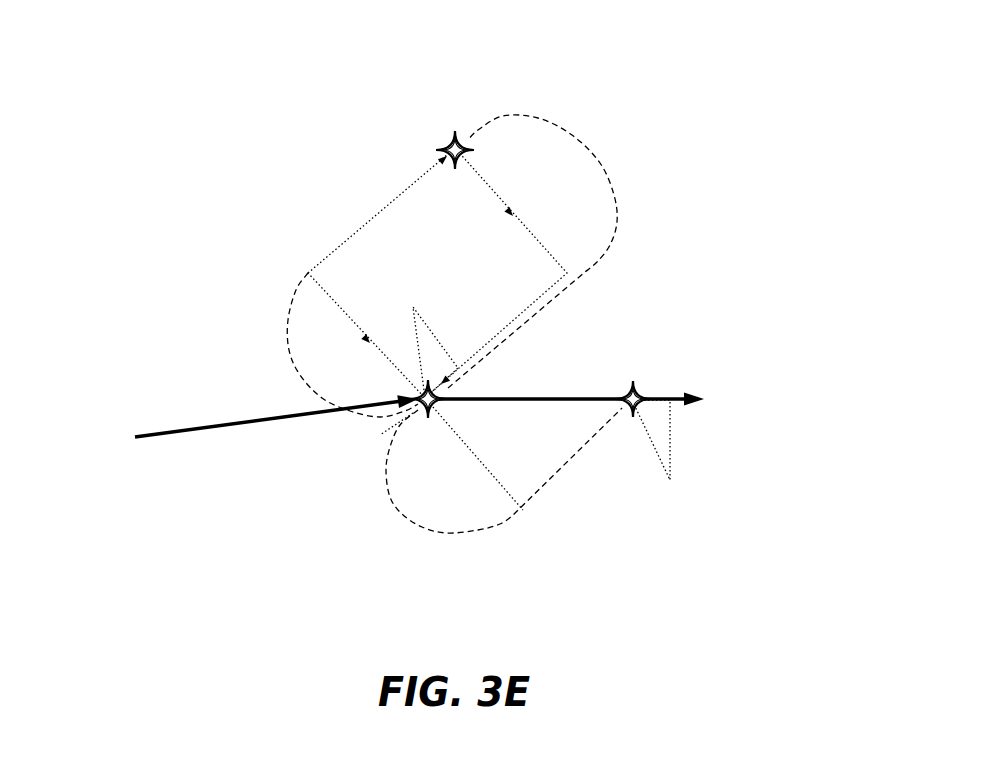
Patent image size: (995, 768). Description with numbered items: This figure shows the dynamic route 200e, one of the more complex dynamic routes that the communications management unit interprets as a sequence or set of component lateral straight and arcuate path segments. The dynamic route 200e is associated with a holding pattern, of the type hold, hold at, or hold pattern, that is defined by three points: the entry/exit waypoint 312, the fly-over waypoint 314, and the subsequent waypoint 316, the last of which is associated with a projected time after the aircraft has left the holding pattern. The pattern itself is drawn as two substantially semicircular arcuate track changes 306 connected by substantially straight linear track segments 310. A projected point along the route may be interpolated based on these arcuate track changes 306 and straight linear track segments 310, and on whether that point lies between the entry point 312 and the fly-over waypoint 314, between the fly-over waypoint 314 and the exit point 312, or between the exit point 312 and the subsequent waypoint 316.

The dynamic route 200e is at (118, 88).
The arcuate track change 306 is at (605, 178).
The straight linear track segment 310 is at (528, 313).
The entry/exit waypoint 312 is at (445, 396).
The fly-over waypoint 314 is at (450, 133).
The subsequent waypoint 316 is at (641, 384).